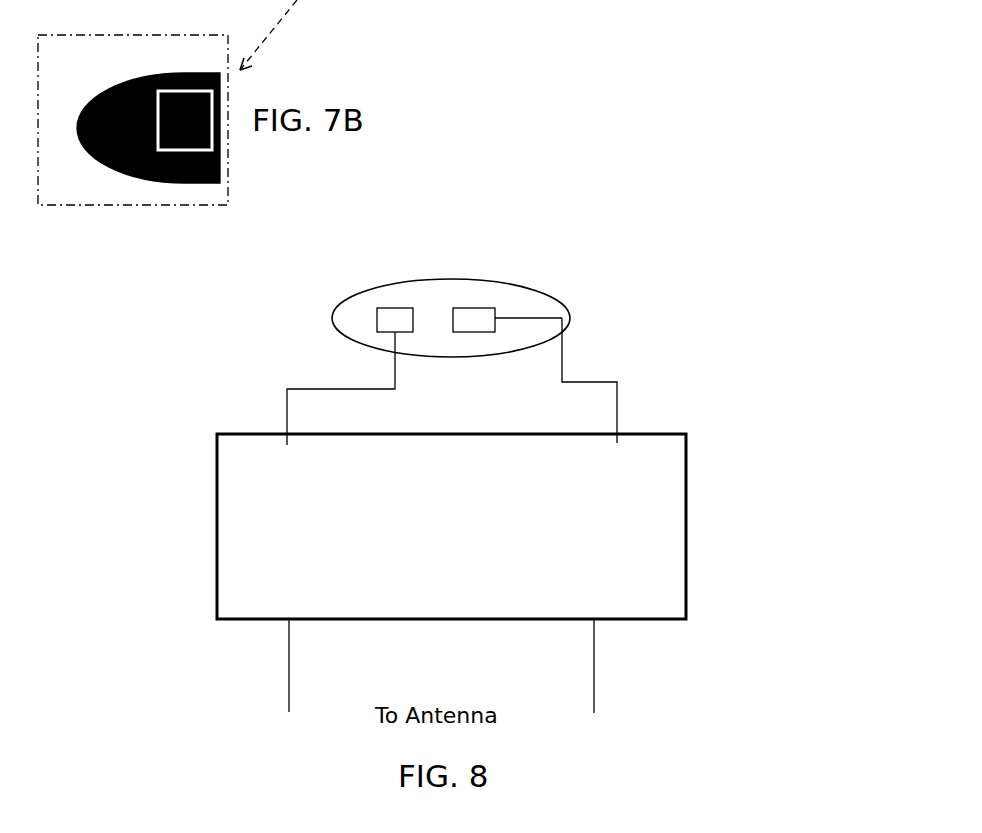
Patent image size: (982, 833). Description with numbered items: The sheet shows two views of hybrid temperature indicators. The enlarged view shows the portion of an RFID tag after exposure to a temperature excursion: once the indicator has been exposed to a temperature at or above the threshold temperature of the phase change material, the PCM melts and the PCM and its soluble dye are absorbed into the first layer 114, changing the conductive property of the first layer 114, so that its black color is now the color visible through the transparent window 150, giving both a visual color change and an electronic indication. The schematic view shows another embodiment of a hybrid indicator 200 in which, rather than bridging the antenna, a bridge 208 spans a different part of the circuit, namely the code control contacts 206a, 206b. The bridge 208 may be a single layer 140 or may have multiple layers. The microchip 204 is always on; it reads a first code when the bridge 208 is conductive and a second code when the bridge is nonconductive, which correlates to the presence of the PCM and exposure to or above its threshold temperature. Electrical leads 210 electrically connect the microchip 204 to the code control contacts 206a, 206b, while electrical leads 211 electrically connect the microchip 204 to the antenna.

In FIG. 7B, the first layer 114 is at (101, 92).
In FIG. 7B, the transparent window 150 is at (158, 124).
In FIG. 8, the hybrid indicator 200 is at (770, 350).
In FIG. 8, the bridge 208 is at (529, 262).
In FIG. 8, the single layer 140 is at (567, 308).
In FIG. 8, the code control contact 206a is at (397, 307).
In FIG. 8, the code control contact 206b is at (474, 306).
In FIG. 8, the electrical leads 210 is at (298, 389).
In FIG. 8, the microchip 204 is at (687, 545).
In FIG. 8, the electrical leads 211 is at (287, 675).